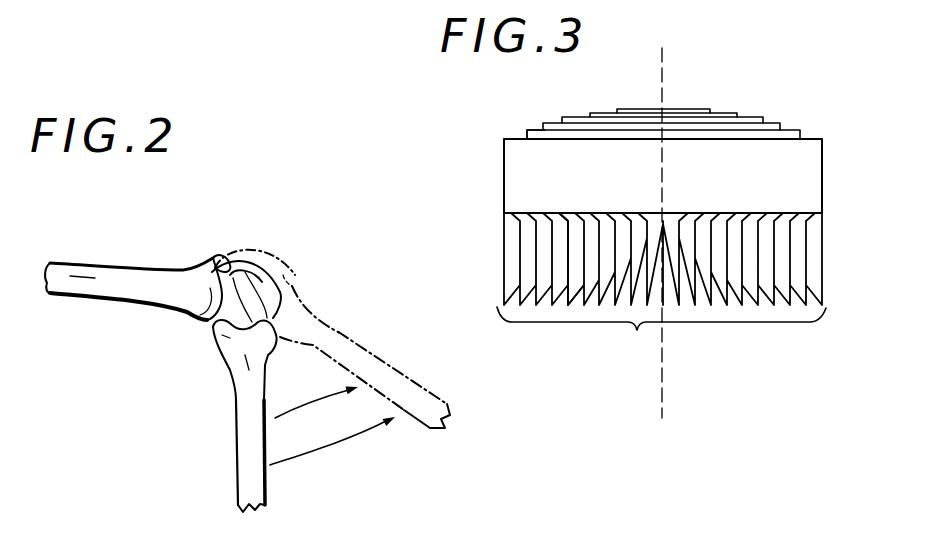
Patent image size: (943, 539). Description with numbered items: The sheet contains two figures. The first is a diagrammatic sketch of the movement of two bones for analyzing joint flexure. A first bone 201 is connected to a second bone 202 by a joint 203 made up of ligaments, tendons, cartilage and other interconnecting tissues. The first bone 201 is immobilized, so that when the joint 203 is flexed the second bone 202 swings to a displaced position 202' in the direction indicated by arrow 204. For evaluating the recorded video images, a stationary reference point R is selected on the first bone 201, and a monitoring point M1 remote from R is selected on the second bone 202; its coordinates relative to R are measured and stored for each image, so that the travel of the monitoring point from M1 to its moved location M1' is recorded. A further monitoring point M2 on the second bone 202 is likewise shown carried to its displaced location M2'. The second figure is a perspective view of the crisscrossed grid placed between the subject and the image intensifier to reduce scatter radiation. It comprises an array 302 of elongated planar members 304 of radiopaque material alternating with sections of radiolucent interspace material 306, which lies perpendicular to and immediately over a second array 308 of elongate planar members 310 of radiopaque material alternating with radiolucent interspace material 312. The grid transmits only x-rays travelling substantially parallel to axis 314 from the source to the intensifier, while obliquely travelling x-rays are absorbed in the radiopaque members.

In FIG. 2, the first bone 201 is at (83, 270).
In FIG. 2, the reference point R is at (112, 285).
In FIG. 2, the joint 203 is at (288, 268).
In FIG. 2, the second bone 202 is at (280, 416).
In FIG. 2, the monitoring point M1 is at (195, 412).
In FIG. 2, the second point on metacarpal M2 is at (196, 470).
In FIG. 2, the second bone position 202' is at (365, 357).
In FIG. 2, the moved monitoring point M1' is at (412, 358).
In FIG. 2, the displaced second point M2' is at (451, 388).
In FIG. 2, the arrow 204 is at (335, 458).
In FIG. 3, the array 302 is at (707, 102).
In FIG. 3, the elongated planar members 304 is at (797, 183).
In FIG. 3, the radiolucent interspace material 306 is at (520, 137).
In FIG. 3, the array 308 is at (661, 339).
In FIG. 3, the elongate planar members 310 is at (810, 277).
In FIG. 3, the radiolucent interspace material 312 is at (563, 305).
In FIG. 3, the axis 314 is at (664, 84).